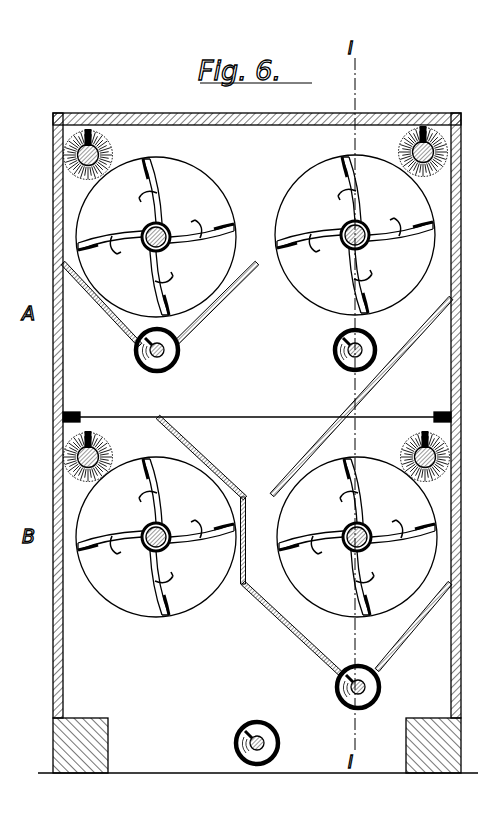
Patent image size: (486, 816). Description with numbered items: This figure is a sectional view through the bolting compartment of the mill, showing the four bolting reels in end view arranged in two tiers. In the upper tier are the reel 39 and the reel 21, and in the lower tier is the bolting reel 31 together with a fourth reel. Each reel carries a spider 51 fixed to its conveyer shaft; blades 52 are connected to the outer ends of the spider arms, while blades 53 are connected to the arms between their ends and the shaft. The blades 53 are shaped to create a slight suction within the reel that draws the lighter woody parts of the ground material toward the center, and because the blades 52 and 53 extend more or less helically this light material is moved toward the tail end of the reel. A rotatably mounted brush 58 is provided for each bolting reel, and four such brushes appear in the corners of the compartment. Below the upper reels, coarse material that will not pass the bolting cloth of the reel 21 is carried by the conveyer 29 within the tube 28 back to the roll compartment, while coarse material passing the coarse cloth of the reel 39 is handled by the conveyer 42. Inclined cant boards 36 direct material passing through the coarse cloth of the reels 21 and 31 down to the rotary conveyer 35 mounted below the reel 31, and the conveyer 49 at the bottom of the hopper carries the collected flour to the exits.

The reel 21 is at (311, 171).
The tube 28 is at (337, 359).
The conveyer 29 is at (334, 347).
The bolting reel 31 is at (374, 459).
The rotary conveyer 35 is at (379, 687).
The cant boards 36 is at (410, 346).
The bolting reel 39 is at (208, 179).
The conveyer 42 is at (156, 372).
The conveyer 49 is at (268, 742).
The spiders 51 is at (158, 184).
The blades 52 is at (231, 221).
The blades 53 is at (203, 220).
The brushes 58 is at (108, 149).